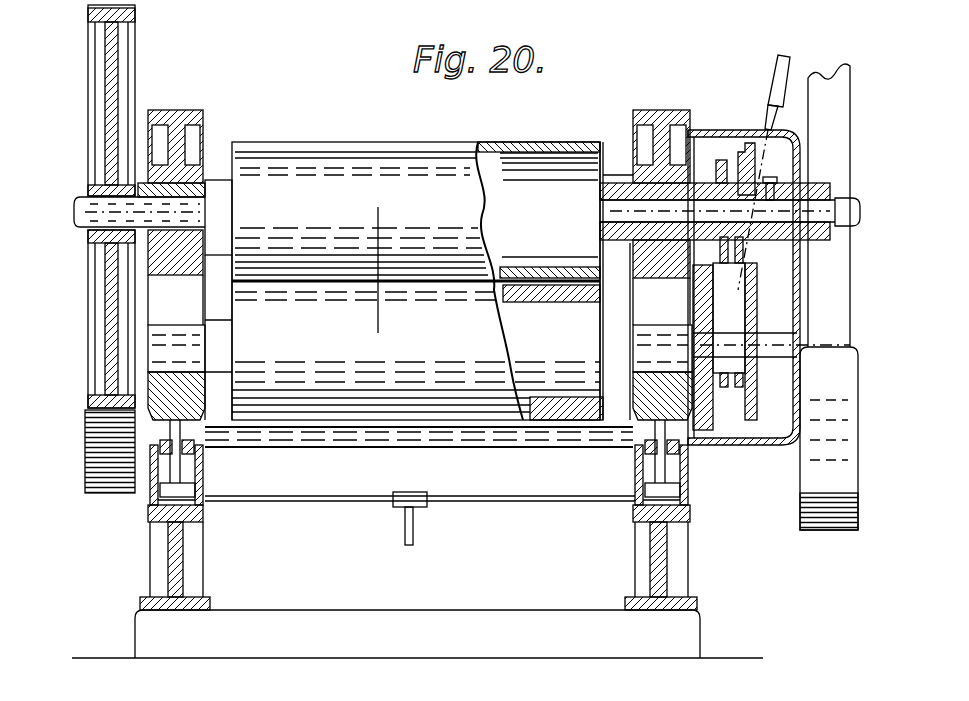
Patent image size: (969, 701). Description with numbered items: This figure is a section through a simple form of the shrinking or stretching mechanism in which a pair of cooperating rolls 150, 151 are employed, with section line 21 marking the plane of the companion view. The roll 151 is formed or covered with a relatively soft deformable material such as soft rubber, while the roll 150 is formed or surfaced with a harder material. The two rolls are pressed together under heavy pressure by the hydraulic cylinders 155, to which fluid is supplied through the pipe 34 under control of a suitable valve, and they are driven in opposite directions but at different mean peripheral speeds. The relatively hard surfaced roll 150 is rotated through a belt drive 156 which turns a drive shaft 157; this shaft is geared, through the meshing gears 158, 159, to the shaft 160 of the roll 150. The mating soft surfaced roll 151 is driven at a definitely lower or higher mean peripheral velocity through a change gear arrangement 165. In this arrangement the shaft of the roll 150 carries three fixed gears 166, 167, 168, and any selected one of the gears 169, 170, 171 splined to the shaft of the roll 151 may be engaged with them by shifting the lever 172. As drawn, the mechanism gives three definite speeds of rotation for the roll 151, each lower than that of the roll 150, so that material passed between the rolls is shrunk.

The section line 21 is at (378, 333).
The pipe 34 is at (510, 501).
The roll 150 is at (523, 144).
The roll 151 is at (569, 392).
The hydraulic cylinders 155 is at (152, 503).
The belt drive 156 is at (818, 497).
The drive shaft 157 is at (330, 445).
The gear 158 is at (102, 468).
The gear 159 is at (130, 86).
The shaft 160 is at (190, 202).
The change gear arrangement 165 is at (743, 86).
The gear 166 is at (718, 160).
The gear 167 is at (745, 157).
The gear 168 is at (757, 162).
The gear 169 is at (695, 273).
The gear 170 is at (712, 297).
The gear 171 is at (756, 318).
The lever 172 is at (787, 62).